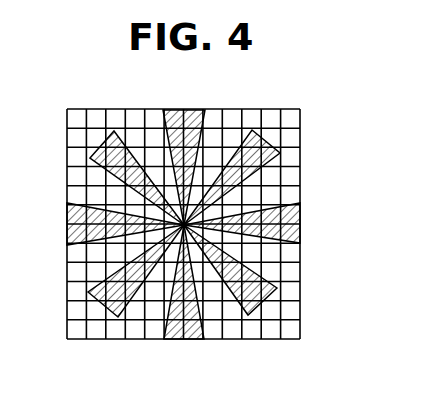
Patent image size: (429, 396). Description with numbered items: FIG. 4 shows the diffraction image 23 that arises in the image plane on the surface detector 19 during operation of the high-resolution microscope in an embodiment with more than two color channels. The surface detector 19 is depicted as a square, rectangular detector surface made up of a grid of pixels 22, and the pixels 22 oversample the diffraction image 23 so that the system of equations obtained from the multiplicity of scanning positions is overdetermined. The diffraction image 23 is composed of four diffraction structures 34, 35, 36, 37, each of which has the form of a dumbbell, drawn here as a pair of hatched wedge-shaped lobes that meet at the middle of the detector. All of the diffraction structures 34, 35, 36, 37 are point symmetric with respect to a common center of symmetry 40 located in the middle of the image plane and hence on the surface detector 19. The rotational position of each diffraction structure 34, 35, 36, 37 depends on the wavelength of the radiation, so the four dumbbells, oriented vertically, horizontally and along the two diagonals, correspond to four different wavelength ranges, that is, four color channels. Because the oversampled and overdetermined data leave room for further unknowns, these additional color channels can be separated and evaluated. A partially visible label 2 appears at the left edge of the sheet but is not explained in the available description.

The diffraction image 23 is at (196, 201).
The surface detector 19 is at (88, 156).
The diffraction structure 37 is at (211, 110).
The diffraction structure 36 is at (282, 152).
The center of symmetry 40 is at (290, 177).
The diffraction structure 35 is at (300, 237).
The diffraction structure 34 is at (283, 289).
The pixels 22 is at (292, 328).
The display panel 2 is at (5, 281).